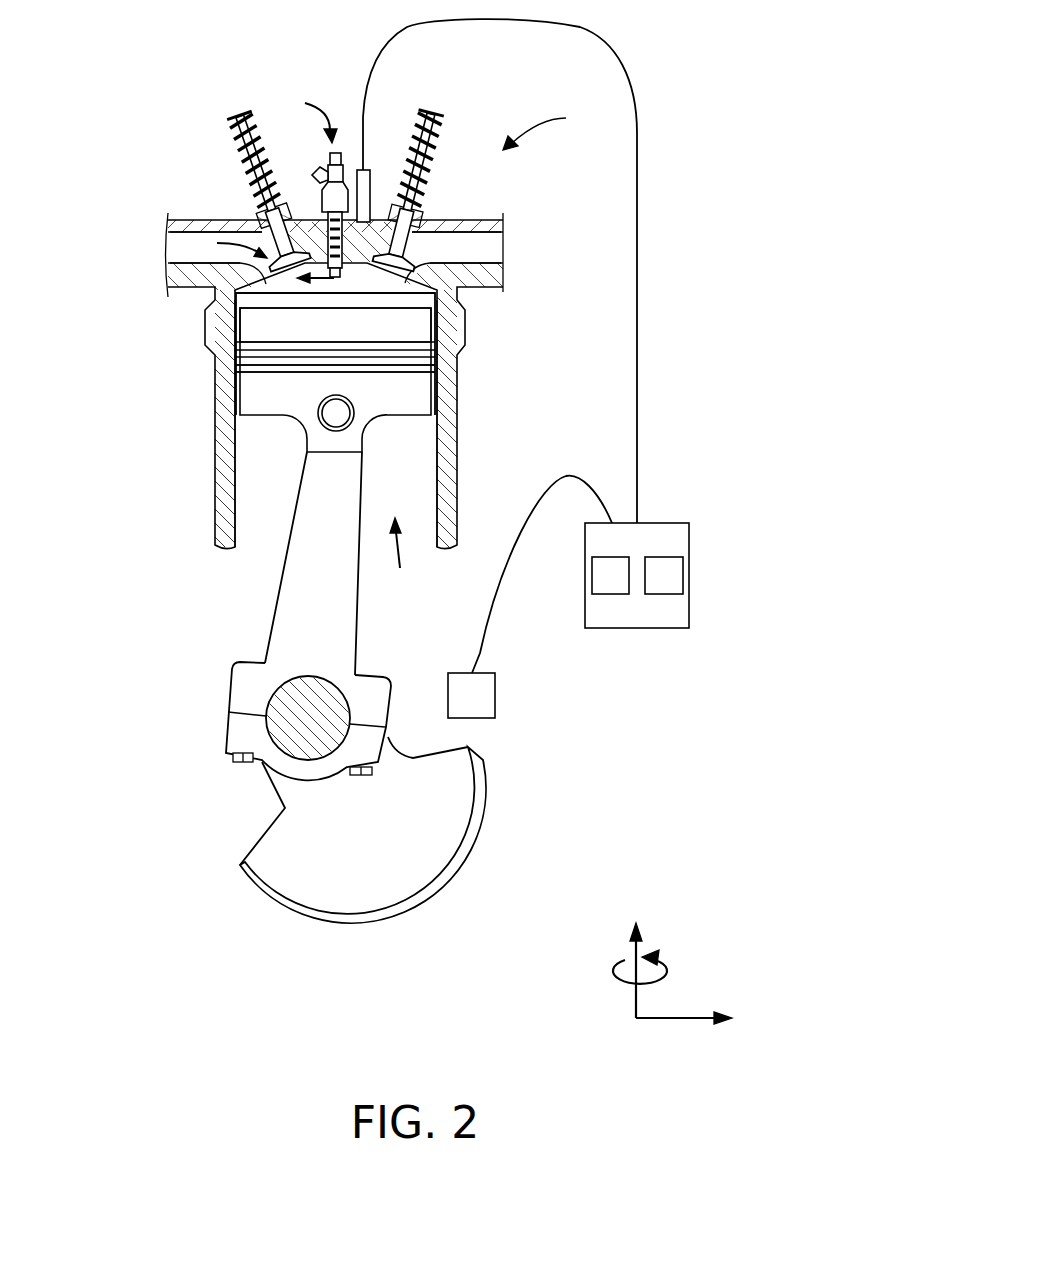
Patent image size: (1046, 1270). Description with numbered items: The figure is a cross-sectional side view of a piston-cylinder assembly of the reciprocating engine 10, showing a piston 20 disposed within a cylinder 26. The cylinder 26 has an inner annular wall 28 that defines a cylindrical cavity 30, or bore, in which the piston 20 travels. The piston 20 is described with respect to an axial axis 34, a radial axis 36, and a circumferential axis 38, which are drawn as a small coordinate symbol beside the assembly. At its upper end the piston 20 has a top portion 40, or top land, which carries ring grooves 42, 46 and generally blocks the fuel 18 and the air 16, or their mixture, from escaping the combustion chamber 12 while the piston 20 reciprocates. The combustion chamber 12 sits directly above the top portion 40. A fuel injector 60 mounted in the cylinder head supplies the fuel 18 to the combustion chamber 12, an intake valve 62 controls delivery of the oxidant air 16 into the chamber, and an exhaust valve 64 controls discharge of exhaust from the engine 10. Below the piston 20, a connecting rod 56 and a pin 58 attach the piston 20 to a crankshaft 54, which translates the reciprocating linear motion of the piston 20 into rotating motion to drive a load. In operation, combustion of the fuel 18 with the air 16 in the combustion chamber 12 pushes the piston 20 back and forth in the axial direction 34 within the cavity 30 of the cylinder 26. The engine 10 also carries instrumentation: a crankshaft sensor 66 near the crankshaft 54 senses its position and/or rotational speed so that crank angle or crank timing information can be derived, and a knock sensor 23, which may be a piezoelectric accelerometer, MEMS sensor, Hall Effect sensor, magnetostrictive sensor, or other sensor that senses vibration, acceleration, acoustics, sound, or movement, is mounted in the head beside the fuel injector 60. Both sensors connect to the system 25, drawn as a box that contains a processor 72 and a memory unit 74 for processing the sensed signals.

The reciprocating engine 10 is at (551, 127).
The combustion chamber 12 is at (382, 283).
The air 16 is at (232, 248).
The fuel 18 is at (305, 117).
The piston 20 is at (410, 405).
The knock sensor 23 is at (370, 185).
The system 25 is at (660, 523).
The cylinder 26 is at (215, 410).
The inner annular wall 28 is at (240, 488).
The cylindrical cavity 30 is at (277, 529).
The axial axis 34 is at (636, 948).
The radial axis 36 is at (680, 1018).
The circumferential axis 38 is at (662, 970).
The top portion 40 is at (405, 330).
The piston rings 42 is at (237, 337).
The piston ring 46 is at (437, 372).
The crankshaft 54 is at (283, 865).
The connecting rod 56 is at (335, 657).
The pin 58 is at (333, 428).
The fuel injector 60 is at (340, 153).
The intake valve 62 is at (238, 112).
The exhaust valve 64 is at (428, 112).
The crankshaft sensor 66 is at (495, 700).
The processor 72 is at (609, 594).
The memory unit 74 is at (660, 594).